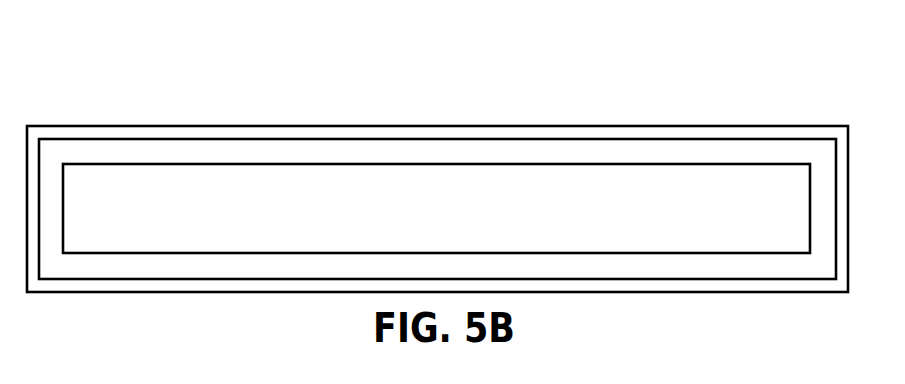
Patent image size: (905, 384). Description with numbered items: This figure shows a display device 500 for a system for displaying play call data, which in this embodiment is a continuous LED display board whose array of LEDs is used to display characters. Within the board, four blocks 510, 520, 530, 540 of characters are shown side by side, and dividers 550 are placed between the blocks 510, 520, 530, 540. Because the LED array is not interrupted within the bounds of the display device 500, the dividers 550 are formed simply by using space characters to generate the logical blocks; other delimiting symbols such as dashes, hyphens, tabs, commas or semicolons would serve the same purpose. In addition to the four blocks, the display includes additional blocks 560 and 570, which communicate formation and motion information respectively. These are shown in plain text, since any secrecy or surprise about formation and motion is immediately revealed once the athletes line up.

The display device 500 is at (828, 283).
The first block of characters 510 is at (337, 167).
The second block of characters 520 is at (482, 166).
The third block of characters 530 is at (617, 166).
The fourth block of characters 540 is at (754, 166).
The dividers 550 is at (182, 200).
The formation block 560 is at (120, 166).
The motion block 570 is at (230, 166).